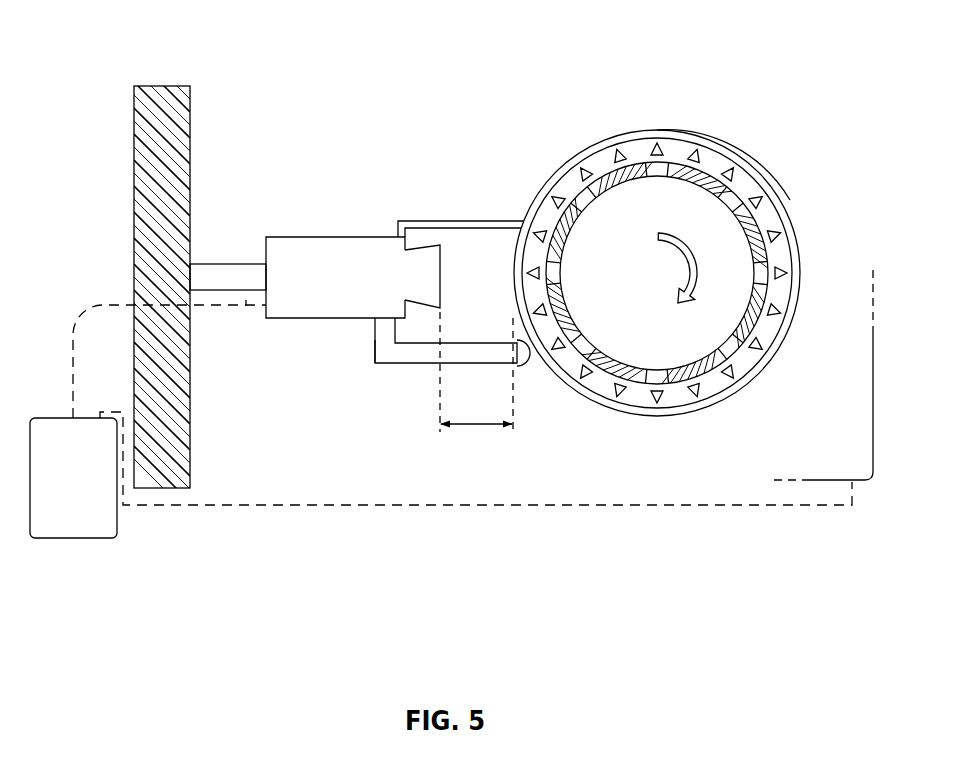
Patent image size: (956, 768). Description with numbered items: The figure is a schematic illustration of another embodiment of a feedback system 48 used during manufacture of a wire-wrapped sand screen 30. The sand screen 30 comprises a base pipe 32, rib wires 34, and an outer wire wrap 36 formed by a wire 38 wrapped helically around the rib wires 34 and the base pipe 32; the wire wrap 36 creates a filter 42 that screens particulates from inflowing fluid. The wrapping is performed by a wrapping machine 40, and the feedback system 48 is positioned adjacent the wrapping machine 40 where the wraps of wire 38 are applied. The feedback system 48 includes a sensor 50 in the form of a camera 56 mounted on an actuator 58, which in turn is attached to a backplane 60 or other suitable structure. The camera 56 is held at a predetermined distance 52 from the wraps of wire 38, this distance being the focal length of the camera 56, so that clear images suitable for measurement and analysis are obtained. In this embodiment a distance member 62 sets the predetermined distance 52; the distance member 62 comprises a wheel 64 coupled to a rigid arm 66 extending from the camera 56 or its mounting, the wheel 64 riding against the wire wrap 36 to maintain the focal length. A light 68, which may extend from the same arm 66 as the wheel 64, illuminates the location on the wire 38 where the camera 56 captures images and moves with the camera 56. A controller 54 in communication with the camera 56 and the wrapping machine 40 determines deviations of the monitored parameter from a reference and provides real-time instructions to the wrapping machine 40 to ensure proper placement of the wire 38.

The sand screen 30 is at (571, 153).
The base pipe 32 is at (720, 167).
The rib wires 34 is at (782, 313).
The wire wrap 36 is at (774, 184).
The wire 38 is at (535, 199).
The wrapping machine 40 is at (873, 402).
The filter 42 is at (662, 128).
The feedback system 48 is at (128, 72).
The sensor 50 is at (287, 337).
The predetermined distance 52 is at (468, 423).
The controller 54 is at (120, 527).
The camera 56 is at (337, 236).
The actuator 58 is at (241, 263).
The backplane 60 is at (86, 304).
The distance member 62 is at (411, 370).
The wheel 64 is at (524, 370).
The rigid arm 66 is at (384, 368).
The light 68 is at (500, 234).